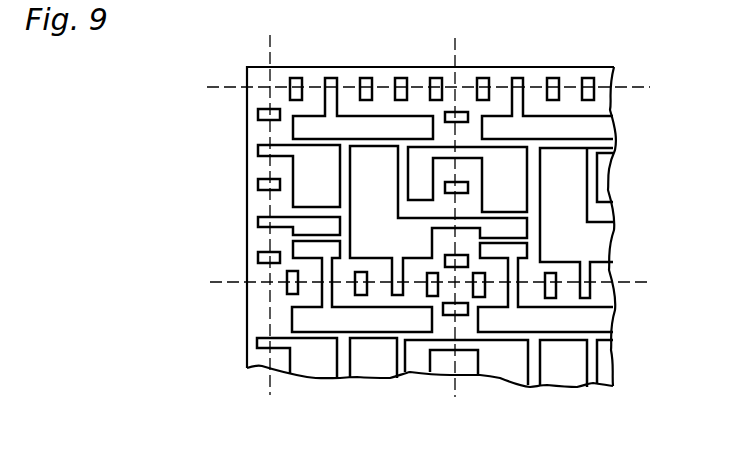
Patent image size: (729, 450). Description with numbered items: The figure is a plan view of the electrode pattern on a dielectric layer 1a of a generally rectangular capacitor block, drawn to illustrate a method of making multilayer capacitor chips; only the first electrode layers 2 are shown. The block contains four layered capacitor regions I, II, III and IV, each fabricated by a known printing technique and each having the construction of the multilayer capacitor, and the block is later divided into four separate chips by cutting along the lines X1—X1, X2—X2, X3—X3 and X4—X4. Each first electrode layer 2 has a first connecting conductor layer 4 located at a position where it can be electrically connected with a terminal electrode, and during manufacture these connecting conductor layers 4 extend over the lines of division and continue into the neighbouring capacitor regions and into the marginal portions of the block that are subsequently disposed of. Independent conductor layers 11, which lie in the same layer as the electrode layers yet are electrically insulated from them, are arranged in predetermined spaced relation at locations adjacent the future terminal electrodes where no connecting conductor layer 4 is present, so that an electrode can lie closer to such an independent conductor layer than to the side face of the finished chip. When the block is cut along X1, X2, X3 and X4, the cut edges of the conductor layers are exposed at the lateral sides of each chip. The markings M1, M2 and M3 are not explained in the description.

The dielectric layer 1a is at (252, 100).
The first internal electrode layer 2 is at (435, 283).
The first connecting conductor layer 4 is at (332, 78).
The independent conductor layer 11 is at (297, 77).
The first metal word line M1 is at (382, 80).
The second metal word line M2 is at (508, 78).
The third metal line contacts M3 is at (253, 161).
The layered capacitor region I is at (262, 202).
The layered capacitor region II is at (605, 180).
The layered capacitor region III is at (367, 365).
The layered capacitor region IV is at (563, 373).
The line of division X1- X1 is at (428, 91).
The line of division X2- X2 is at (428, 287).
The line of division X3- X3 is at (269, 218).
The line of division X4- X4 is at (457, 219).